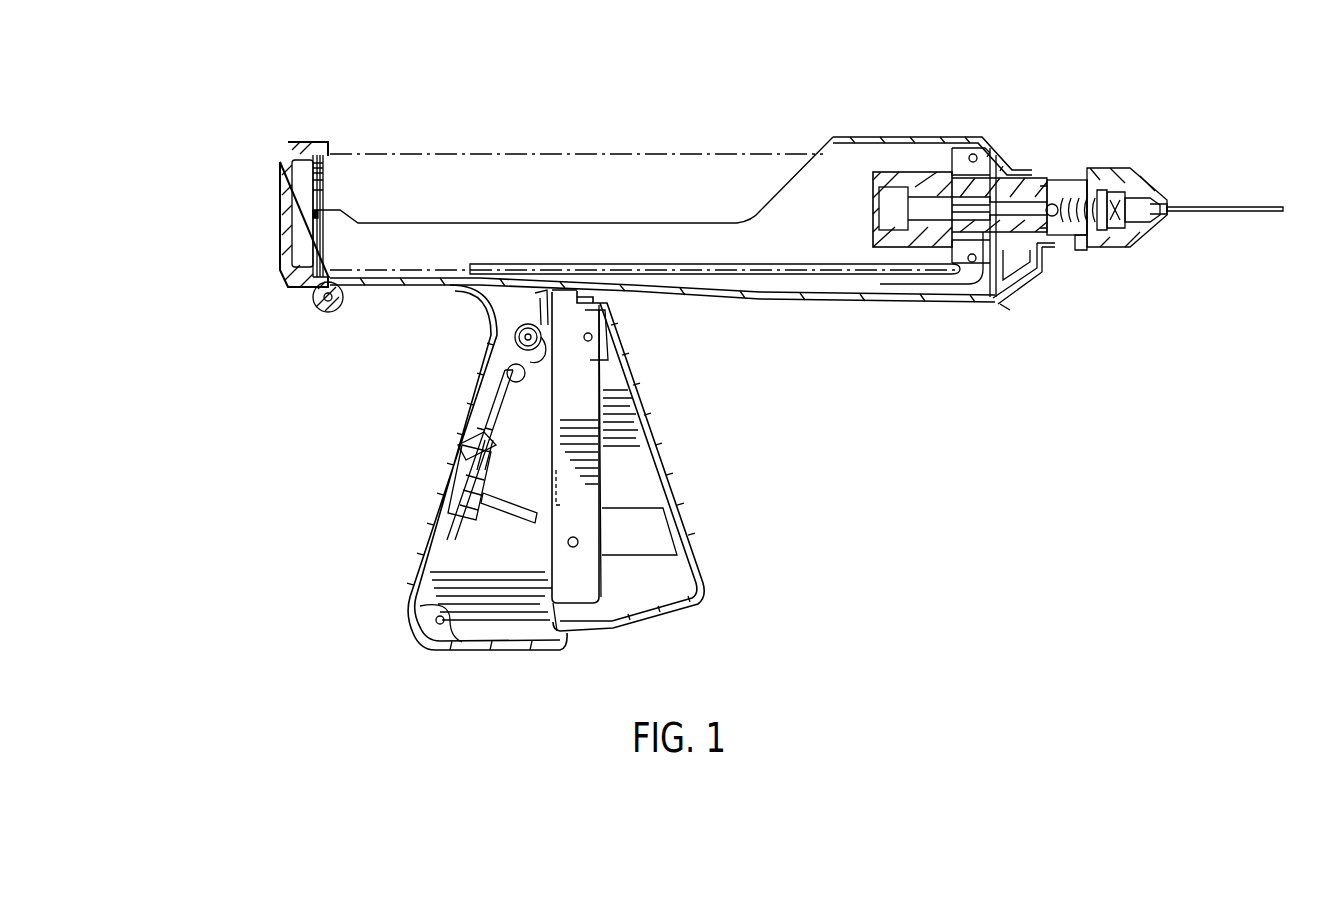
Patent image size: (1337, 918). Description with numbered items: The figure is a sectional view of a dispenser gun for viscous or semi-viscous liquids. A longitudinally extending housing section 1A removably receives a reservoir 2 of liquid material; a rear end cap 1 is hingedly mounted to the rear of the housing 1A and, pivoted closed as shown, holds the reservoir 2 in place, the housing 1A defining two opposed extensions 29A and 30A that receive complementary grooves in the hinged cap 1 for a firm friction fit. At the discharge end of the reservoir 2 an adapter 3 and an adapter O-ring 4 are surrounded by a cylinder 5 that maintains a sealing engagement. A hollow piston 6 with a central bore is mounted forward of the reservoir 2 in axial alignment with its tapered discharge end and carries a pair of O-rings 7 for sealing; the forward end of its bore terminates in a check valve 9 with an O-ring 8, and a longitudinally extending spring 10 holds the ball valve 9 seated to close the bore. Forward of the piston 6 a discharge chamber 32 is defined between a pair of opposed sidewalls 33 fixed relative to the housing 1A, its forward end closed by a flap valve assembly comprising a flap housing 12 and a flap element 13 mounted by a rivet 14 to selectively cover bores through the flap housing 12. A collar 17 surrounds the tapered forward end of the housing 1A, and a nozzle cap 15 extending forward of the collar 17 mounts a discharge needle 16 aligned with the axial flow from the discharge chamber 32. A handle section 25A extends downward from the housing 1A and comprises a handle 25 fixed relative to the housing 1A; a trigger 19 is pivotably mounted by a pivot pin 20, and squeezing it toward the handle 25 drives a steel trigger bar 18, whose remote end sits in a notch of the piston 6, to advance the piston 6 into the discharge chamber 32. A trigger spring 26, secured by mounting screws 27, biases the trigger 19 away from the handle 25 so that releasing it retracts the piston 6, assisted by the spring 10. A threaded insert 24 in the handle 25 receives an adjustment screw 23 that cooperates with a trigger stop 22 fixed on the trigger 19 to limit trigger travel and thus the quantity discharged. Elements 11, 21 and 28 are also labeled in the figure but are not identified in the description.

The rear end cap 1 is at (290, 141).
The housing section 1A is at (640, 245).
The reservoir 2 is at (440, 152).
The adapter 3 is at (882, 176).
The adapter O-ring 4 is at (935, 185).
The cylinder 5 is at (960, 182).
The hollow piston 6 is at (1005, 185).
The O-rings 7 is at (1040, 185).
The O-ring 8 is at (1047, 200).
The check valve 9 is at (1060, 205).
The spring 10 is at (1110, 200).
The spring retainer 11 is at (1110, 190).
The flap housing 12 is at (1130, 195).
The flap element 13 is at (1150, 200).
The rivet 14 is at (1167, 207).
The nozzle cap 15 is at (1173, 200).
The discharge needle 16 is at (1274, 212).
The collar 17 is at (1040, 250).
The trigger bar 18 is at (1005, 298).
The trigger section 19 is at (683, 437).
The pivot pin 20 is at (600, 340).
The trigger rear portion 21 is at (583, 557).
The trigger stop 22 is at (570, 573).
The adjustment screw 23 is at (513, 517).
The threaded insert 24 is at (445, 522).
The handle 25 is at (440, 515).
The handle section 25A is at (428, 466).
The trigger spring 26 is at (508, 355).
The mounting screws 27 is at (520, 337).
The end roller 28 is at (320, 309).
The extension 29A is at (315, 226).
The extension 30A is at (321, 216).
The forward discharge chamber 32 is at (1080, 240).
The sidewalls 33 is at (1083, 200).